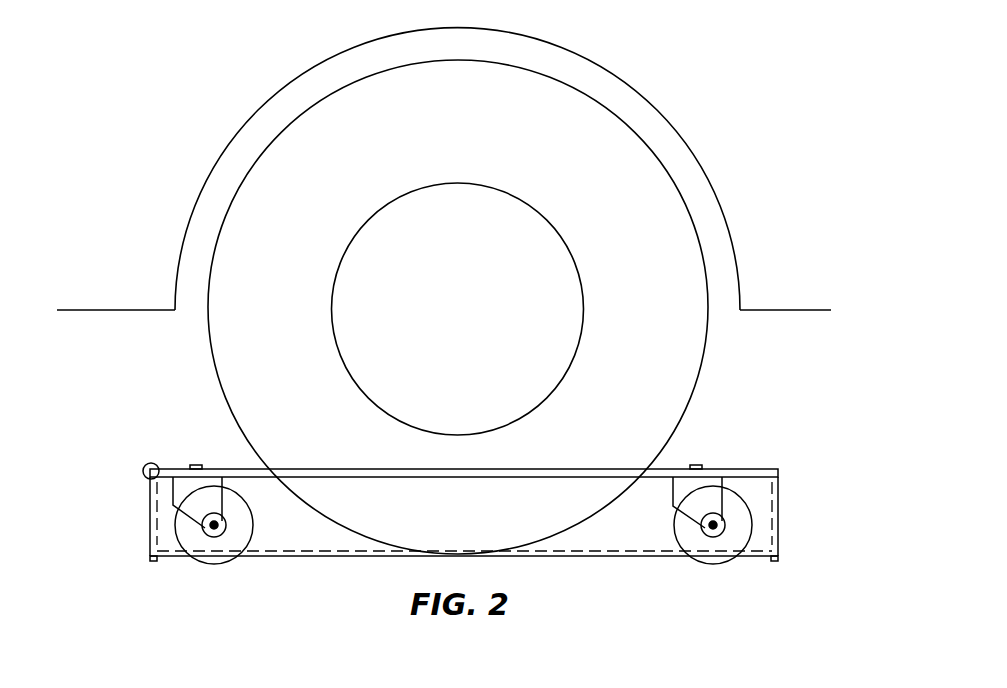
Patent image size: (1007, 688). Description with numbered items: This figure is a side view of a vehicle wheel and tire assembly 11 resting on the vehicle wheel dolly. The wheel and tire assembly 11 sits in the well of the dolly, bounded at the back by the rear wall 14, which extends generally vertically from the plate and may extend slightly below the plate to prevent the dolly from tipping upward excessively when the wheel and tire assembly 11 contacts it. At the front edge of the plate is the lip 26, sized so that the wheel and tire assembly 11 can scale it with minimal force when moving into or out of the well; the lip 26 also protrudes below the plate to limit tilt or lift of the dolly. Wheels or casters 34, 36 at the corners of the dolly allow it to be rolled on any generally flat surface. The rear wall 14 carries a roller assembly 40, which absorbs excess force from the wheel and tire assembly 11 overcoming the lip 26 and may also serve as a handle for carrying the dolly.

The wheel and tire assembly 11 is at (602, 180).
The rear wall 14 is at (150, 560).
The lip 26 is at (780, 562).
The wheel or caster 34 is at (737, 540).
The wheel or caster 36 is at (198, 542).
The roller assembly 40 is at (147, 463).